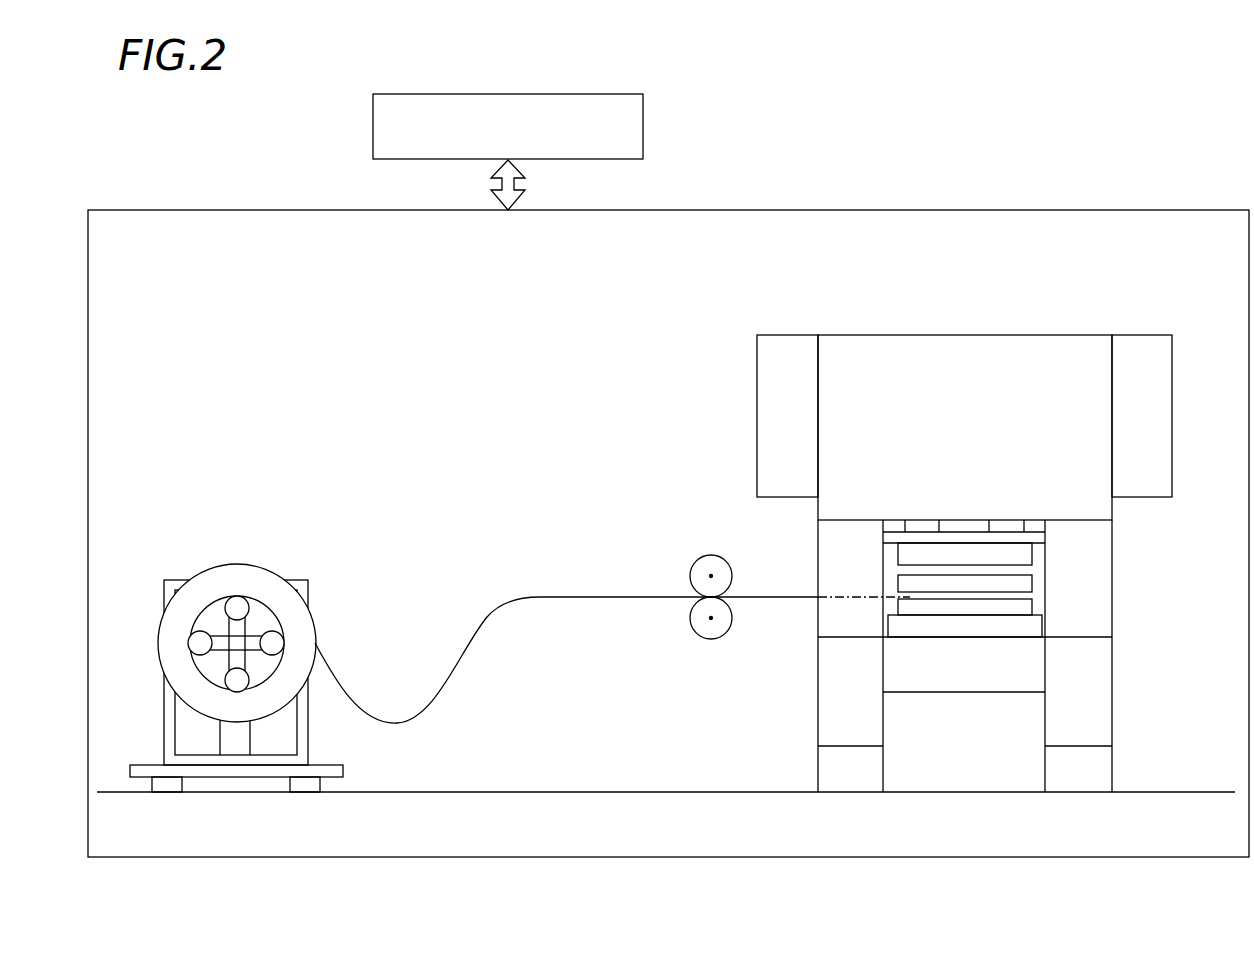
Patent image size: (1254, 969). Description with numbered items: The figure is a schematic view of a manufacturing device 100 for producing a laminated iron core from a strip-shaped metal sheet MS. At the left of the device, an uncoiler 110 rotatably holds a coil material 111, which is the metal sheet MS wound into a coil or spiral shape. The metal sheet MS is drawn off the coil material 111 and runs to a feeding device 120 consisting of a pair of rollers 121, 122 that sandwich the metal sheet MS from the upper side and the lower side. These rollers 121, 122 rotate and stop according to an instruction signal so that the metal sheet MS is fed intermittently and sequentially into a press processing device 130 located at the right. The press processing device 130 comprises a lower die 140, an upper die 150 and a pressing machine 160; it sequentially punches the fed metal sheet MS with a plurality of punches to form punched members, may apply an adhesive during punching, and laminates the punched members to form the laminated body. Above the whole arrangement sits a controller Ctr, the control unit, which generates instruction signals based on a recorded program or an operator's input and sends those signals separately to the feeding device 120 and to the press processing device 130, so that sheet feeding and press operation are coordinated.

The manufacturing device 100 is at (250, 200).
The controller Ctr is at (643, 127).
The uncoiler 110 is at (236, 645).
The coil material 111 is at (234, 565).
The metal sheet MS is at (338, 677).
The feeding device 120 is at (720, 568).
The roller 121 is at (725, 561).
The roller 122 is at (726, 633).
The press processing device 130 is at (995, 530).
The lower die 140 is at (1060, 623).
The upper die 150 is at (1060, 554).
The pressing machine 160 is at (962, 335).